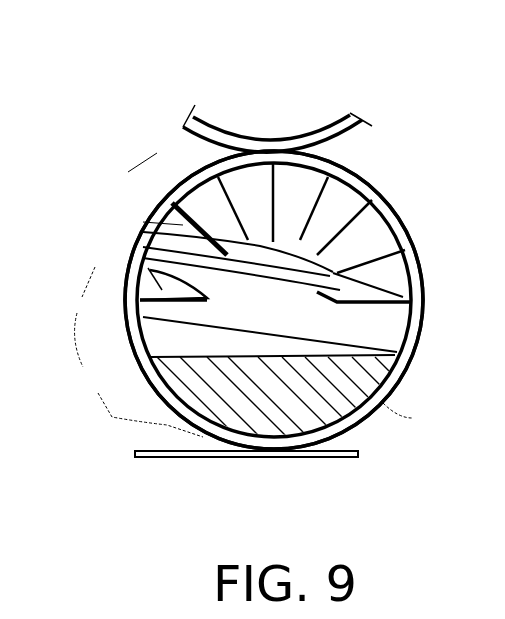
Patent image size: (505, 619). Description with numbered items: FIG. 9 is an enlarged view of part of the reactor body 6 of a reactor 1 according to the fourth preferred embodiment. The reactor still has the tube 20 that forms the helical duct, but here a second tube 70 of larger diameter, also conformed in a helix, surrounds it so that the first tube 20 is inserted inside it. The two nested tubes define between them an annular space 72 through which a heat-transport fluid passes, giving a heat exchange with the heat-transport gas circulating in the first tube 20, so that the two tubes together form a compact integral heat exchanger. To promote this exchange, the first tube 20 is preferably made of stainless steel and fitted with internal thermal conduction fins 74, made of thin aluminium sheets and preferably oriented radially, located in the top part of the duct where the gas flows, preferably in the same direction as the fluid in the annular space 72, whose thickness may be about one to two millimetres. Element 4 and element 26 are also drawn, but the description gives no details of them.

The reactor 1 is at (337, 100).
The ground surface 4 is at (222, 410).
The reactor body 6 is at (157, 153).
The tube 20 is at (412, 263).
The hatched ballast / tire section 26 is at (371, 399).
The second tube 70 is at (367, 182).
The annular space 72 is at (409, 233).
The internal thermal conduction fins 74 is at (140, 250).